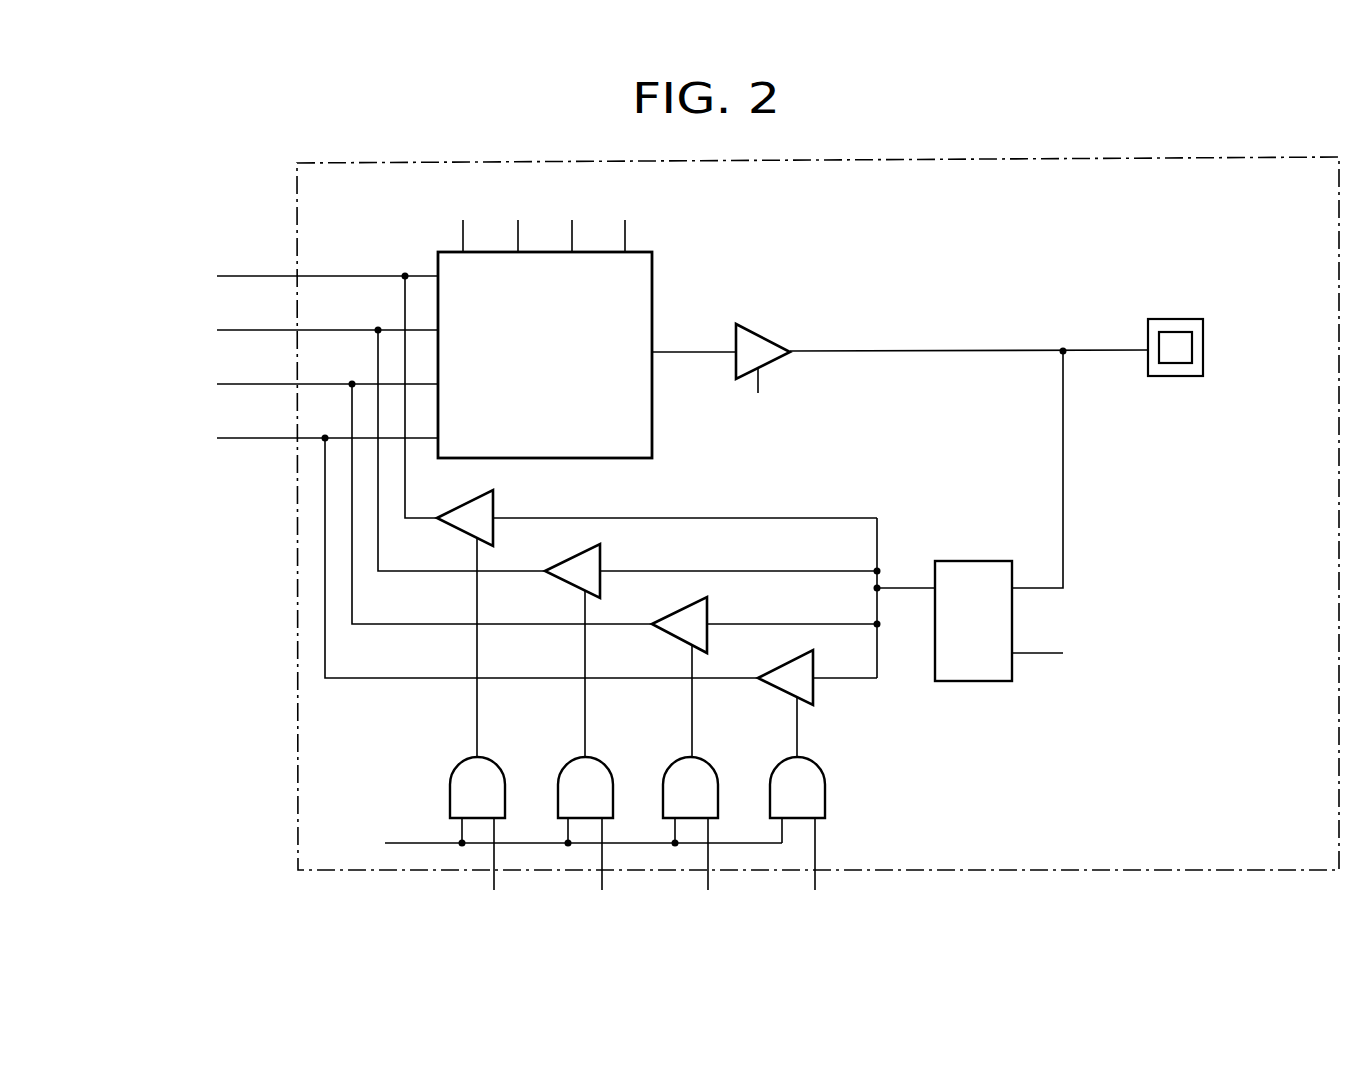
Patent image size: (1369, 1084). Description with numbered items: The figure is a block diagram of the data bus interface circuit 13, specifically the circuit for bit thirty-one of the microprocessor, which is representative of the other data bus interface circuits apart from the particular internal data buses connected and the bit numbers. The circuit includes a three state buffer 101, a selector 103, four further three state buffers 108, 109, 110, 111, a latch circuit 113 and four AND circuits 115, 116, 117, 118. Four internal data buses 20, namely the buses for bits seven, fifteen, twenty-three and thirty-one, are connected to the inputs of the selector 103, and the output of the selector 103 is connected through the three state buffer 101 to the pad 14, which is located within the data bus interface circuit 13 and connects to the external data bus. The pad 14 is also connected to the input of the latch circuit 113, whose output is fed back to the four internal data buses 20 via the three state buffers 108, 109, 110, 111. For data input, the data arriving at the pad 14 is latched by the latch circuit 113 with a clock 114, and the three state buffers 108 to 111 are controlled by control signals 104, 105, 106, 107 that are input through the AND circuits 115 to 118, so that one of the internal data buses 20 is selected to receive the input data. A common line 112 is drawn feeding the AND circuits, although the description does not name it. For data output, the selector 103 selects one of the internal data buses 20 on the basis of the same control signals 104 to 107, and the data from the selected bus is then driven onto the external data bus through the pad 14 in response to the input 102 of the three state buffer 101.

The data bus interface circuit 13 is at (1092, 123).
The pad 14 is at (1187, 319).
The internal data bus 20 is at (217, 276).
The three state buffer 101 is at (760, 327).
The input of the three state buffer 102 is at (759, 396).
The selector 103 is at (652, 263).
The control signal 104 is at (479, 554).
The control signal 105 is at (561, 554).
The control signal 106 is at (640, 554).
The control signal 107 is at (720, 554).
The three state buffer 108 is at (493, 500).
The three state buffer 109 is at (600, 552).
The three state buffer 110 is at (707, 605).
The three state buffer 111 is at (790, 692).
The enable signal line 112 is at (562, 843).
The latch circuit 113 is at (968, 561).
The clock 114 is at (1062, 653).
The AND circuit 115 is at (462, 762).
The AND circuit 116 is at (570, 762).
The AND circuit 117 is at (675, 762).
The AND circuit 118 is at (780, 762).